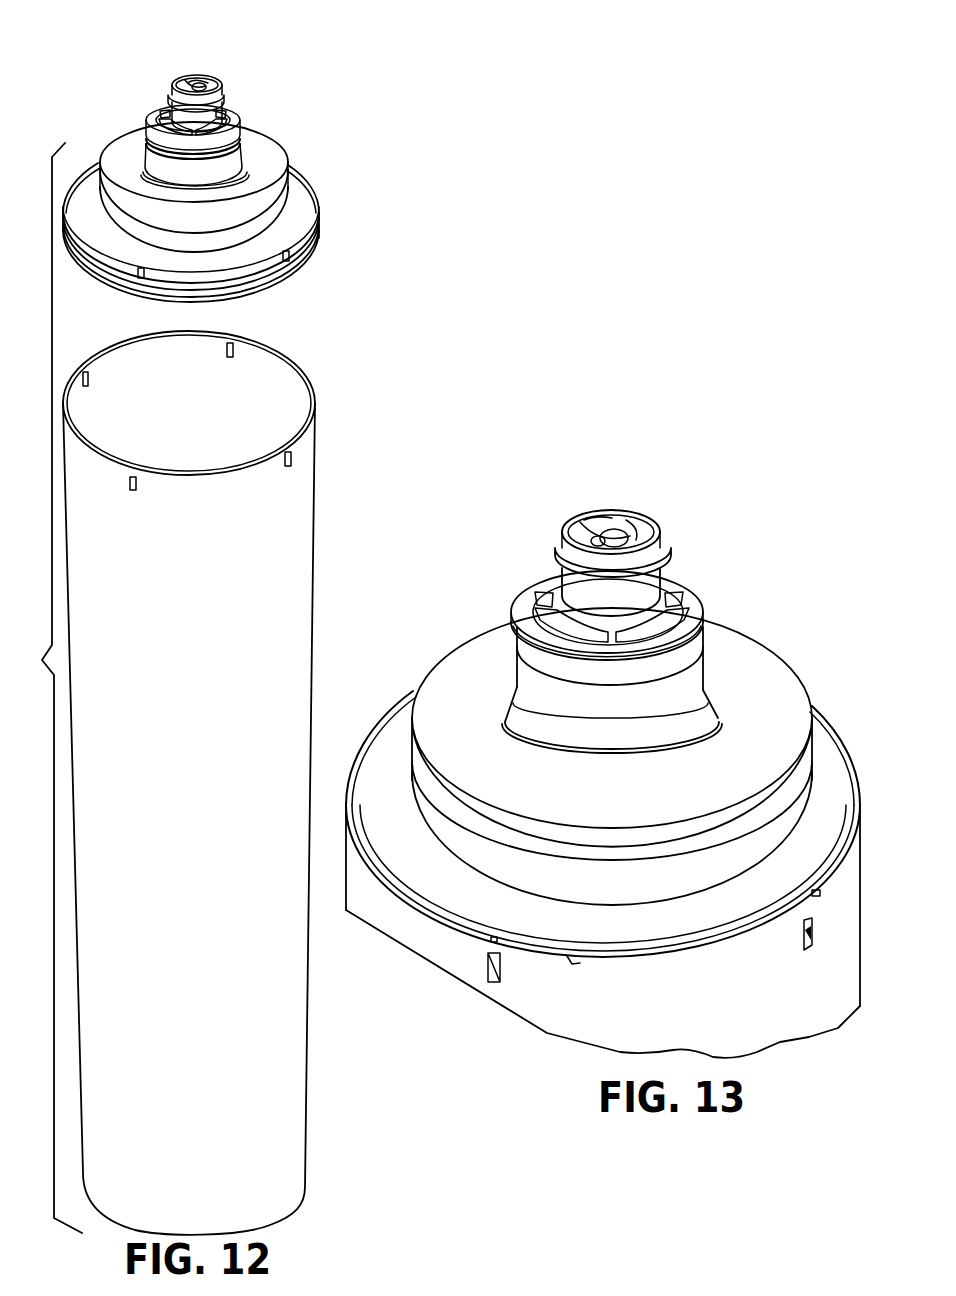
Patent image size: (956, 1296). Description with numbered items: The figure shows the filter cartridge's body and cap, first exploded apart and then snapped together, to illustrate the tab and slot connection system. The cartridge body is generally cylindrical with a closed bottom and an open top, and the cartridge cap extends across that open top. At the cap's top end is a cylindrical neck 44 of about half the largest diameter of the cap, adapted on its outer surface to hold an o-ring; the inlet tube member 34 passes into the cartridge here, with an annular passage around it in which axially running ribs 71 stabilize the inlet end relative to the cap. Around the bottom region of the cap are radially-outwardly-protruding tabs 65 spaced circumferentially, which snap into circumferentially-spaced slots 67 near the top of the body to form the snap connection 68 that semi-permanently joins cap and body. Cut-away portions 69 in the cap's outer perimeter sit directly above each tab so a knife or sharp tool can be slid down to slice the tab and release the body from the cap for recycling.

In FIG. 12, the inlet tube member 34 is at (222, 96).
In FIG. 12, the cylindrical neck 44 is at (247, 140).
In FIG. 12, the tabs 65 is at (293, 258).
In FIG. 13, the tabs 65 is at (500, 962).
In FIG. 12, the slots 67 is at (292, 458).
In FIG. 13, the slots 67 is at (492, 983).
In FIG. 13, the snap connection 68 is at (851, 752).
In FIG. 13, the cut-away portions 69 is at (787, 907).
In FIG. 13, the ribs 71 is at (683, 597).